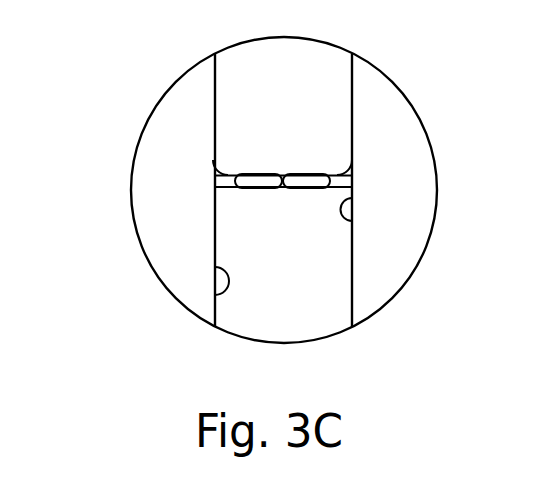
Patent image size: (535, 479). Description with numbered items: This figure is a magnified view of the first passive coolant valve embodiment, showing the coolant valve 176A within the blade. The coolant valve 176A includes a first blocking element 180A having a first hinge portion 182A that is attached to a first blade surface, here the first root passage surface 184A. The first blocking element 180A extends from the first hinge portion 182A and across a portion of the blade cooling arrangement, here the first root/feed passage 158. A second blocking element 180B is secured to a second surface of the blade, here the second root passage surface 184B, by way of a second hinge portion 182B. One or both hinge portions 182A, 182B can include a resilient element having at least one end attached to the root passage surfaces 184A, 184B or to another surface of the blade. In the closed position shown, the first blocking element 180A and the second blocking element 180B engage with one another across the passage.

The first root/feed passage 158 is at (299, 92).
The coolant valve 176A is at (232, 107).
The first blocking element 180A is at (262, 183).
The second blocking element 180B is at (303, 183).
The first hinge portion 182A is at (213, 160).
The second hinge portion 182B is at (352, 160).
The first root passage surface 184A is at (215, 294).
The second root passage surface 184B is at (352, 200).